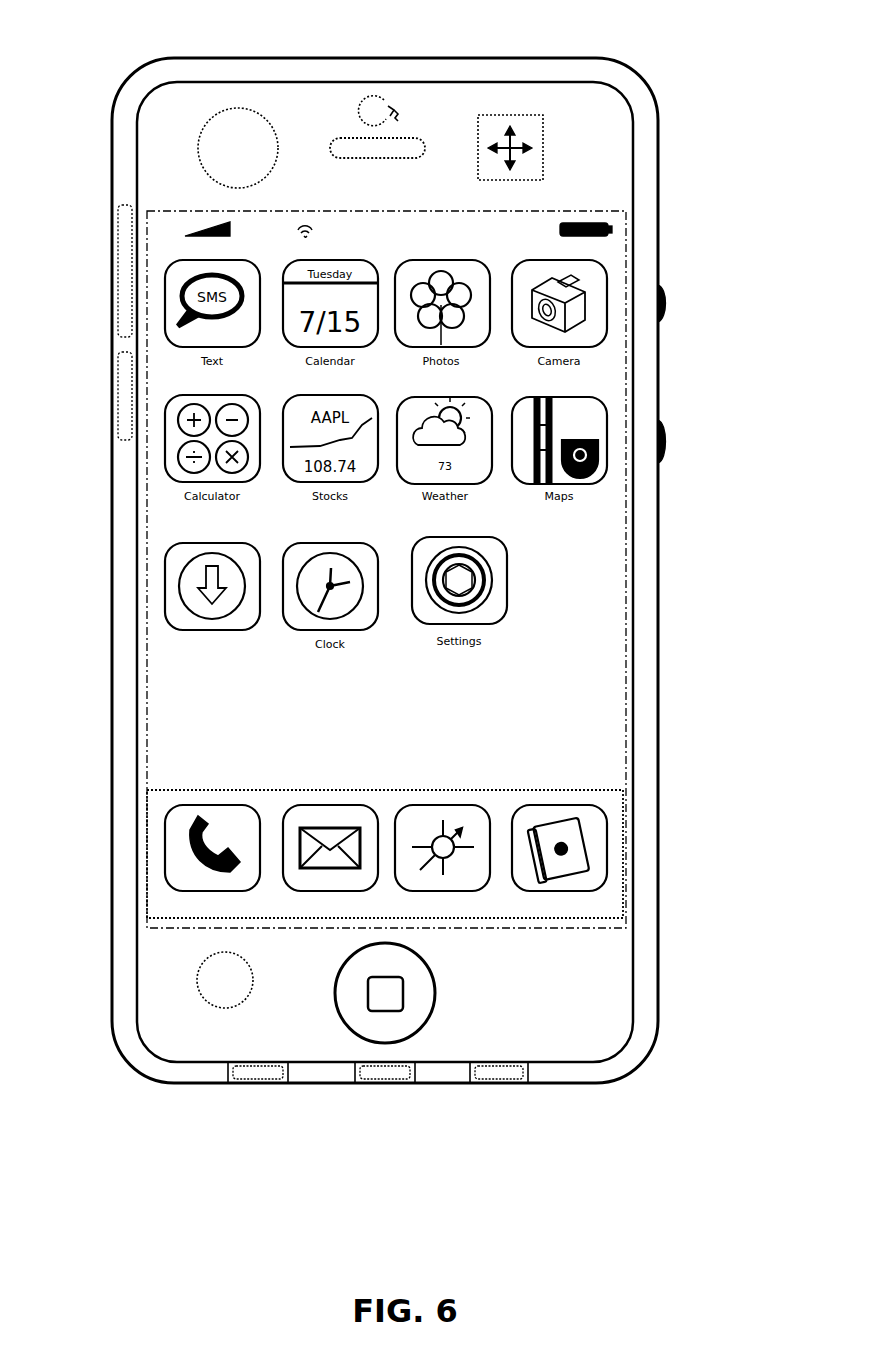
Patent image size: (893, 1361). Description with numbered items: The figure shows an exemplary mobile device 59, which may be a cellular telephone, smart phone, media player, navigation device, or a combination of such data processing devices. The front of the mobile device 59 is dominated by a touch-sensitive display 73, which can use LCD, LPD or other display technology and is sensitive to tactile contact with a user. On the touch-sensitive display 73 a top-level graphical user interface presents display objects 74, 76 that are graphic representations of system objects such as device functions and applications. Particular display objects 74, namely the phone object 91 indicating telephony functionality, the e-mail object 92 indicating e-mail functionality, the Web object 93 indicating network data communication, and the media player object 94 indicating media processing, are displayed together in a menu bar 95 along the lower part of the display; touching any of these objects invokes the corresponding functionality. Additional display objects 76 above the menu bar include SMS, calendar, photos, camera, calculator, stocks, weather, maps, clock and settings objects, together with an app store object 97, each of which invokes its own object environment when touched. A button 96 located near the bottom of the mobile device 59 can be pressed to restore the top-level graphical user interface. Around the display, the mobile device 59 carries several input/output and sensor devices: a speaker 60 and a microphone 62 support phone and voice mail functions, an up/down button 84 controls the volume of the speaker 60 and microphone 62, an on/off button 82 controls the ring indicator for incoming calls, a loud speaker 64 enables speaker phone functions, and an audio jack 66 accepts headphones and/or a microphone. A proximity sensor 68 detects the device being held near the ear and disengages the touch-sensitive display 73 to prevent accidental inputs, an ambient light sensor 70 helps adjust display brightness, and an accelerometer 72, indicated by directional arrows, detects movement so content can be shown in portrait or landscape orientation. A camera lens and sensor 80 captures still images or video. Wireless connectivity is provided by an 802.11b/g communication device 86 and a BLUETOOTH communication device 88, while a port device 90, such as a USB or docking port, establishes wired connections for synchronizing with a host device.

The mobile device 59 is at (470, 57).
The audio jack 66 is at (214, 80).
The proximity sensor 68 is at (212, 176).
The camera lens and sensor 80 is at (406, 116).
The speaker 60 is at (383, 159).
The accelerometer 72 is at (545, 152).
The touch-sensitive display 73 is at (562, 211).
The 802.11b/g communication device 86 is at (112, 248).
The BLUETOOTH communication device 88 is at (112, 396).
The on/off button 82 is at (668, 302).
The up/down button 84 is at (668, 440).
The app store object 97 is at (211, 543).
The display objects 76 is at (568, 675).
The display objects 74 is at (610, 801).
The phone object 91 is at (212, 805).
The e-mail object 92 is at (330, 805).
The Web object 93 is at (445, 805).
The media player object 94 is at (558, 805).
The menu bar 95 is at (522, 929).
The button 96 is at (436, 993).
The ambient light sensor 70 is at (226, 1009).
The microphone 62 is at (262, 1084).
The port device 90 is at (392, 1084).
The loud speaker 64 is at (497, 1084).